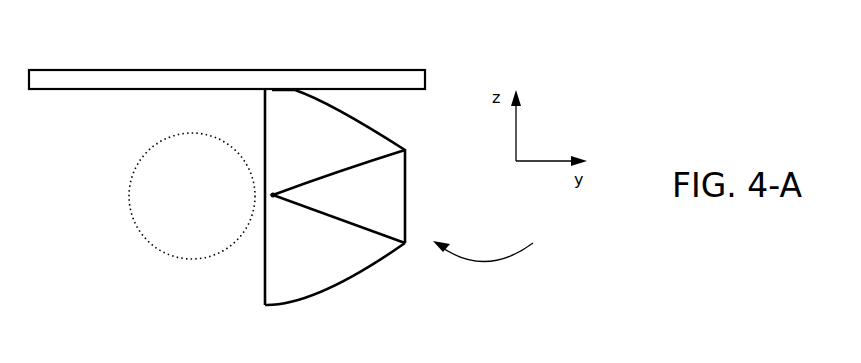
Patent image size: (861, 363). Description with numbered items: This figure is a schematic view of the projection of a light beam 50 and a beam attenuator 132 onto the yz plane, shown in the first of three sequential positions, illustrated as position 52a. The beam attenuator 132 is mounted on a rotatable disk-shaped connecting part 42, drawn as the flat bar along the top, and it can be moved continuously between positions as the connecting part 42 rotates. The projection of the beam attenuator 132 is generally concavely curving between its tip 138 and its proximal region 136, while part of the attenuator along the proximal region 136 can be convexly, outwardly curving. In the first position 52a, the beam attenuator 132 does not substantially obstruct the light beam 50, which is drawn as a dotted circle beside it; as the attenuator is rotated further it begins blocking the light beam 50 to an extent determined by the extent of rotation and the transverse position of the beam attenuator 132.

The connecting part 42 is at (358, 70).
The light beam 50 is at (147, 153).
The first position 52a is at (500, 243).
The beam attenuator 132 is at (357, 273).
The proximal region 136 is at (298, 303).
The tip 138 is at (278, 197).